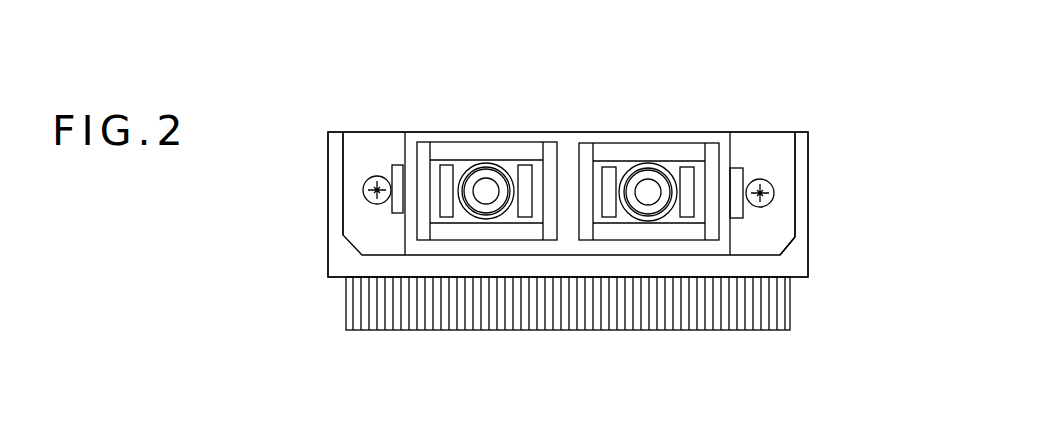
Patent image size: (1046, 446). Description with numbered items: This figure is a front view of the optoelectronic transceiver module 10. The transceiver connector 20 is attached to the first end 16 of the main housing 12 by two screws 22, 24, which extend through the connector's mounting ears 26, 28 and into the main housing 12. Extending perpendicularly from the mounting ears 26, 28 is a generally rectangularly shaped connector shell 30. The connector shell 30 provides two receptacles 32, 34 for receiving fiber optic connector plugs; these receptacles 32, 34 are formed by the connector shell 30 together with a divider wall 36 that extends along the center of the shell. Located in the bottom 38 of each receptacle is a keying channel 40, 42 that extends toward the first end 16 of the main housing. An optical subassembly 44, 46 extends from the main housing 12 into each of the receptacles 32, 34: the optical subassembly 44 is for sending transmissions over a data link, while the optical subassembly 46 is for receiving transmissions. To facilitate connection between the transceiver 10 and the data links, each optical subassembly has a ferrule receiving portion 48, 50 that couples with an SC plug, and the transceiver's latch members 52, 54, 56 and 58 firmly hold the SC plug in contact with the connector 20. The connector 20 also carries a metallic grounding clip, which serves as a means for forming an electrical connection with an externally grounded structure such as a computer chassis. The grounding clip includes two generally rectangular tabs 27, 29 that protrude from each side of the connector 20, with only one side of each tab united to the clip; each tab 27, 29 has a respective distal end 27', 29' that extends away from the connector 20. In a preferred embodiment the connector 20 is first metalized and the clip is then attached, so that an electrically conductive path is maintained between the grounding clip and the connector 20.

The optoelectronic transceiver module 10 is at (797, 102).
The main housing 12 is at (335, 215).
The first end 16 is at (343, 150).
The transceiver connector 20 is at (721, 140).
The screw 22 is at (775, 184).
The screw 24 is at (353, 205).
The mounting ear 26 is at (790, 258).
The tab 27 is at (843, 176).
The distal end 27' is at (841, 226).
The mounting ear 28 is at (358, 165).
The tab 29 is at (465, 145).
The distal end 29' is at (331, 207).
The connector shell 30 is at (413, 247).
The receptacle 32 is at (687, 220).
The receptacle 34 is at (450, 222).
The divider wall 36 is at (565, 217).
The bottom 38 is at (547, 258).
The keying channel 40 is at (667, 243).
The keying channel 42 is at (493, 242).
The optical subassembly 44 is at (637, 163).
The optical subassembly 46 is at (477, 162).
The ferrule receiving portion 48 is at (665, 163).
The ferrule receiving portion 50 is at (502, 160).
The latch member 52 is at (687, 172).
The latch member 54 is at (610, 177).
The latch member 56 is at (525, 170).
The latch member 58 is at (453, 163).